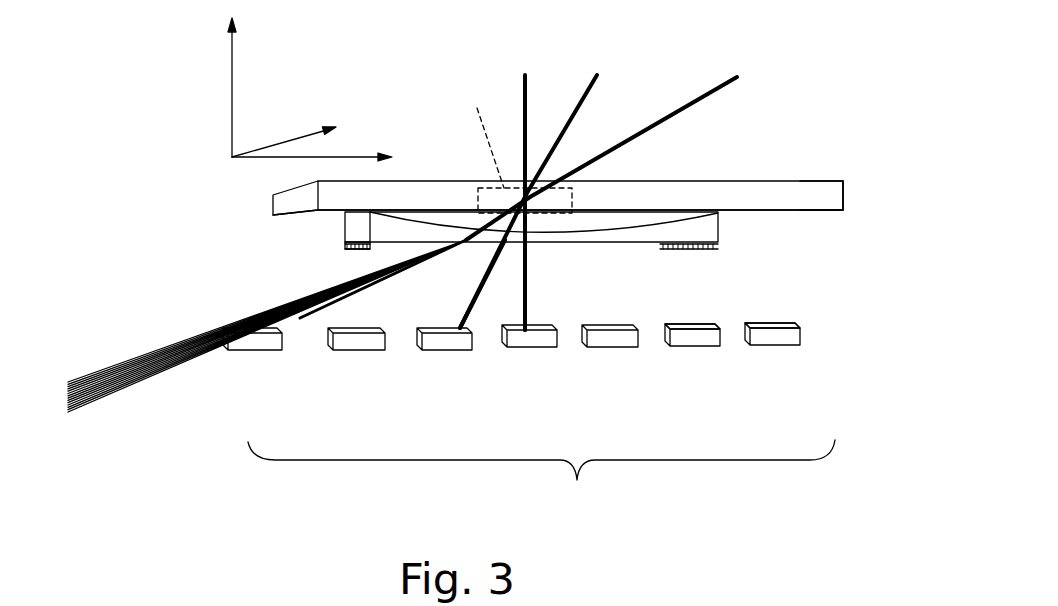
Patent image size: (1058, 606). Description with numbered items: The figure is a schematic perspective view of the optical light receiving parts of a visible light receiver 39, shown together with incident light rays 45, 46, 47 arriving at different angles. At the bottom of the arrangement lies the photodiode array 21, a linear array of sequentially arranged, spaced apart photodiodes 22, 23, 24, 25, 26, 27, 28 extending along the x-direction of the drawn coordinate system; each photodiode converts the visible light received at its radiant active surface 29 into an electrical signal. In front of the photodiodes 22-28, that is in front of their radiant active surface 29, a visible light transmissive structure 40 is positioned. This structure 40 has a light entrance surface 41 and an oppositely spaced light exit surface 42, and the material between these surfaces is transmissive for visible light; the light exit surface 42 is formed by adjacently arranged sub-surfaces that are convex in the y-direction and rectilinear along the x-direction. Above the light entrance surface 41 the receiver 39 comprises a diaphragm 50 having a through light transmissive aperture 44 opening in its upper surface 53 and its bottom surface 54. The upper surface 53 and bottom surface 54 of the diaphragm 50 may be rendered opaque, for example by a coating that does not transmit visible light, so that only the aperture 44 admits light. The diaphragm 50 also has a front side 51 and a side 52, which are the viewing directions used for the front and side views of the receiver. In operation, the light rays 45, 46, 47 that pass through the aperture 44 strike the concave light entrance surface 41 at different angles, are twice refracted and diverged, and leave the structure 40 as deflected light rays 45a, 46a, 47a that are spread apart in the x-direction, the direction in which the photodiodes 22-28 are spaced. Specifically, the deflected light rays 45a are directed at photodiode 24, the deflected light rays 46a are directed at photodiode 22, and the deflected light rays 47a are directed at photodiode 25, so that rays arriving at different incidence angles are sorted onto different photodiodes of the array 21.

The photodetector array 21 is at (541, 482).
The photodiode 22 is at (258, 345).
The photodiode 23 is at (363, 345).
The photodiode 24 is at (450, 347).
The photodiode 25 is at (540, 347).
The photodiode 26 is at (622, 345).
The photodiode 27 is at (700, 345).
The photodiode 28 is at (772, 345).
The radiant active surface 29 is at (767, 327).
The visible light receiver 39 is at (143, 136).
The visible light transmissive structure 40 is at (712, 228).
The light entrance surface 41 is at (668, 216).
The light exit surface 42 is at (362, 249).
The light transmissive aperture 44 is at (514, 146).
The light ray 45 is at (592, 91).
The deflected light ray 45a is at (474, 294).
The light ray 46 is at (710, 90).
The deflected light ray 46a is at (152, 365).
The light ray 47 is at (527, 90).
The deflected light ray 47a is at (527, 293).
The diaphragm 50 is at (843, 181).
The front side 51 is at (833, 198).
The side 52 is at (849, 190).
The upper surface 53 is at (300, 183).
The bottom surface 54 is at (318, 212).